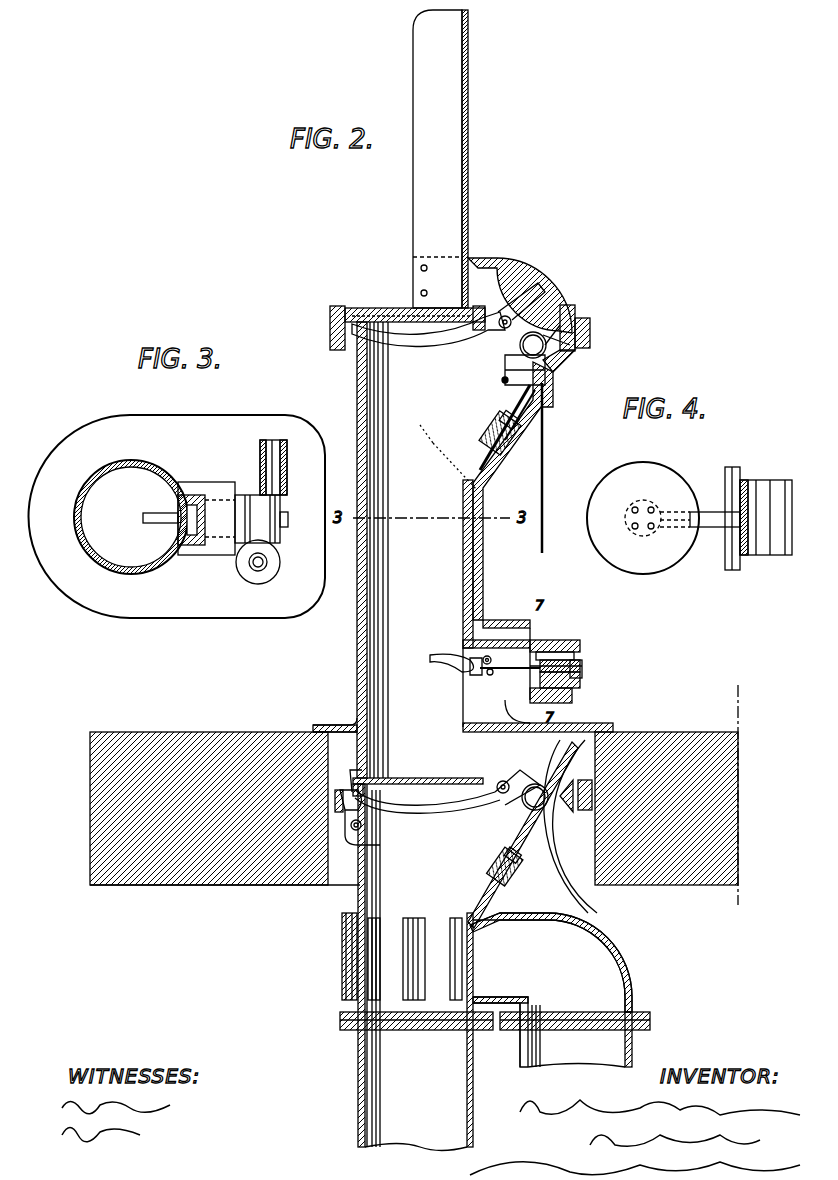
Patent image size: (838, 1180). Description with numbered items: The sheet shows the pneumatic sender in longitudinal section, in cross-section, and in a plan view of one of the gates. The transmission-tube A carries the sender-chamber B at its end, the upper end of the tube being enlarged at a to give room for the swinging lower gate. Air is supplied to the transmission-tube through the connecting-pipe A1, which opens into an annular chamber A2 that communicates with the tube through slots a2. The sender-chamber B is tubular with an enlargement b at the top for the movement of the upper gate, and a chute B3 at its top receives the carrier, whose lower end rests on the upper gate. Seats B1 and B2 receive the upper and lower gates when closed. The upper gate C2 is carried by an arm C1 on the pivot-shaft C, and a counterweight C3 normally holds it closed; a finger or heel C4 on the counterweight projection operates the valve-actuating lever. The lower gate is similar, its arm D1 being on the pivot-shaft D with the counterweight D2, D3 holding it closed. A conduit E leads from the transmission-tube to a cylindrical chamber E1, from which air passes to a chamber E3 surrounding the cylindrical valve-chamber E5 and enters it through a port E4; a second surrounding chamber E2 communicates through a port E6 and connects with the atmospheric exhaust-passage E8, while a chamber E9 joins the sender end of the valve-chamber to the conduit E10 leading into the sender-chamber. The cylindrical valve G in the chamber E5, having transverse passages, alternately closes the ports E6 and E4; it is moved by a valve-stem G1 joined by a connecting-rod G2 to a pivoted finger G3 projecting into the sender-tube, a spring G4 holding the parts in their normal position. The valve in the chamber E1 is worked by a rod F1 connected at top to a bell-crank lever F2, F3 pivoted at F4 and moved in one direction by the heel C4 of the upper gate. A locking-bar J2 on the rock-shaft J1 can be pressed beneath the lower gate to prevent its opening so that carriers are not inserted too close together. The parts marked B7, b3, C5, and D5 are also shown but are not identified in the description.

In FIG. 2, the transmission-tube A is at (416, 967).
In FIG. 2, the connecting-pipe A1 is at (600, 1045).
In FIG. 2, the annular chamber A2 is at (520, 975).
In FIG. 2, the slots a2 is at (462, 1000).
In FIG. 2, the sender-chamber B is at (371, 550).
In FIG. 3, the sender-chamber B is at (131, 517).
In FIG. 2, the seat B1 is at (352, 308).
In FIG. 3, the seat B1 is at (285, 450).
In FIG. 2, the seat B2 is at (418, 768).
In FIG. 3, the seat B2 is at (290, 440).
In FIG. 2, the chute B3 is at (419, 394).
In FIG. 3, the chute B3 is at (285, 486).
In FIG. 3, the bushing B7 is at (265, 470).
In FIG. 2, the enlargement b is at (455, 386).
In FIG. 2, the lug b3 is at (334, 817).
In FIG. 2, the pivot-shaft C is at (500, 330).
In FIG. 4, the pivot-shaft C is at (738, 570).
In FIG. 2, the arm C1 is at (445, 340).
In FIG. 4, the arm C1 is at (715, 527).
In FIG. 2, the upper gate C2 is at (390, 316).
In FIG. 4, the upper gate C2 is at (643, 518).
In FIG. 2, the counterweight C3 is at (560, 328).
In FIG. 4, the counterweight C3 is at (780, 524).
In FIG. 2, the finger C4 is at (503, 380).
In FIG. 2, the weight block C5 is at (490, 425).
In FIG. 2, the pivot-shaft D is at (500, 800).
In FIG. 2, the arm D1 is at (450, 808).
In FIG. 2, the counterweight D2 is at (370, 782).
In FIG. 2, the counterweight D3 is at (559, 826).
In FIG. 2, the lower weight D5 is at (490, 870).
In FIG. 2, the enlargement a is at (471, 837).
In FIG. 2, the conduit E is at (560, 718).
In FIG. 3, the cylindrical chamber E1 is at (278, 570).
In FIG. 2, the chamber E2 is at (572, 695).
In FIG. 2, the chamber E3 is at (545, 640).
In FIG. 2, the port E4 is at (560, 650).
In FIG. 2, the cylindrical valve-chamber E5 is at (575, 655).
In FIG. 2, the port E6 is at (583, 663).
In FIG. 3, the atmospheric connection E8 is at (282, 505).
In FIG. 2, the chamber E9 is at (535, 620).
In FIG. 2, the conduit E10 is at (484, 560).
In FIG. 3, the conduit E10 is at (192, 508).
In FIG. 2, the rod F1 is at (559, 468).
In FIG. 3, the rod F1 is at (260, 570).
In FIG. 2, the bell-crank lever F2 is at (520, 415).
In FIG. 2, the bell-crank lever F3 is at (525, 369).
In FIG. 2, the pivot F4 is at (505, 426).
In FIG. 2, the cylindrical valve G is at (582, 680).
In FIG. 2, the valve-stem G1 is at (510, 678).
In FIG. 2, the connecting-rod G2 is at (485, 685).
In FIG. 2, the pivoted finger G3 is at (450, 668).
In FIG. 3, the pivoted finger G3 is at (158, 523).
In FIG. 2, the spring G4 is at (585, 668).
In FIG. 2, the rock-shaft J1 is at (366, 829).
In FIG. 2, the locking-bar J2 is at (363, 810).